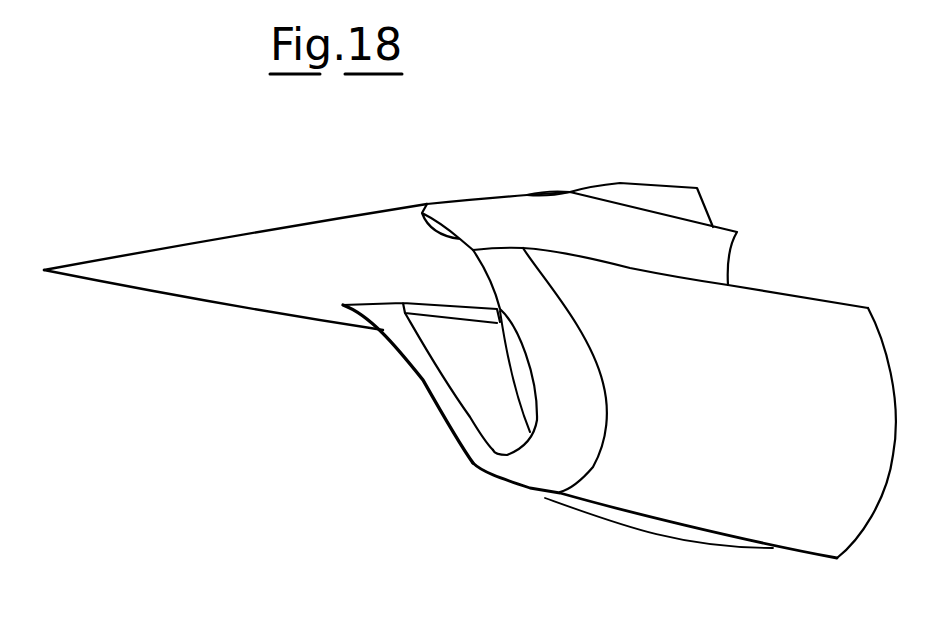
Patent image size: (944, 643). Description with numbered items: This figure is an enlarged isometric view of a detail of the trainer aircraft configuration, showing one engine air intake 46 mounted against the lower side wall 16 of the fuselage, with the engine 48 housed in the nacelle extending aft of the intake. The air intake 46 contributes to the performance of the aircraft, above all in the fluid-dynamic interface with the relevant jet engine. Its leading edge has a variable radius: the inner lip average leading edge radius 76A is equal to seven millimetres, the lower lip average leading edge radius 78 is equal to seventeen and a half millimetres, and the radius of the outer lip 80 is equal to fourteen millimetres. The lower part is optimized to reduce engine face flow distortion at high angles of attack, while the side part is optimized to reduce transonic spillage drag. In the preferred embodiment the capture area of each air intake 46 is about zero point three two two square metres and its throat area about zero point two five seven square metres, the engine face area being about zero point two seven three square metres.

The lower side wall 16 is at (173, 283).
The air intake 46 is at (490, 405).
The engine 48 is at (677, 502).
The inner lip average leading edge radius 76A is at (432, 358).
The lower lip average leading edge radius 78 is at (503, 452).
The outer lip 80 is at (553, 350).